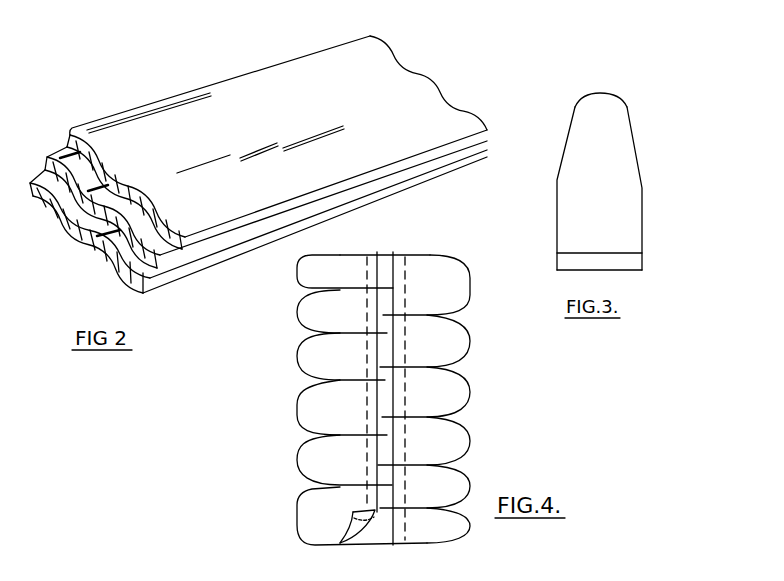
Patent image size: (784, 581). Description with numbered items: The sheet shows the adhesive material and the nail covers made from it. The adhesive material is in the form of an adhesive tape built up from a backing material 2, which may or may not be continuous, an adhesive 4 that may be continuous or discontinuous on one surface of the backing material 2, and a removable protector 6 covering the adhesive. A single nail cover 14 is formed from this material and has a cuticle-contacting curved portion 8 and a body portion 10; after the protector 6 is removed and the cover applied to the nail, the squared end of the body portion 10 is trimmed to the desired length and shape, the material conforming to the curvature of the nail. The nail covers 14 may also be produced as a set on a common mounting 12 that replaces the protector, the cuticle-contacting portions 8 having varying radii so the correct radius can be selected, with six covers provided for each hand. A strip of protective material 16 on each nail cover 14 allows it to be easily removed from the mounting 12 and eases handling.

In FIG. 2, the backing material 2 is at (462, 162).
In FIG. 2, the adhesive 4 is at (488, 142).
In FIG. 2, the protector 6 is at (487, 130).
In FIG. 3, the cuticle-contacting curved portion 8 is at (628, 106).
In FIG. 4, the cuticle-contacting curved portion 8 is at (297, 284).
In FIG. 3, the body portion 10 is at (580, 221).
In FIG. 4, the mounting 12 is at (383, 252).
In FIG. 3, the nail cover 14 is at (646, 198).
In FIG. 4, the nail cover 14 is at (305, 417).
In FIG. 4, the strip of protective material 16 is at (310, 525).